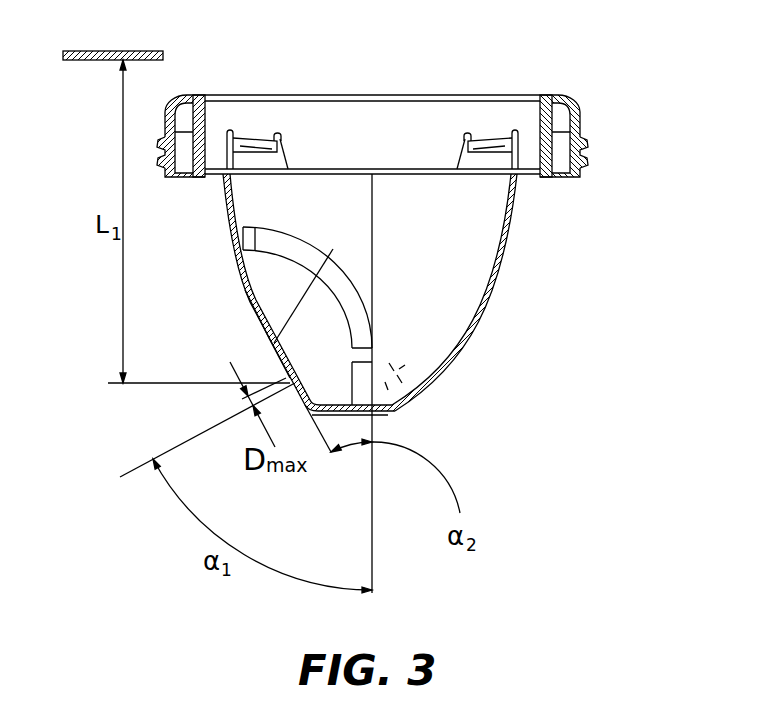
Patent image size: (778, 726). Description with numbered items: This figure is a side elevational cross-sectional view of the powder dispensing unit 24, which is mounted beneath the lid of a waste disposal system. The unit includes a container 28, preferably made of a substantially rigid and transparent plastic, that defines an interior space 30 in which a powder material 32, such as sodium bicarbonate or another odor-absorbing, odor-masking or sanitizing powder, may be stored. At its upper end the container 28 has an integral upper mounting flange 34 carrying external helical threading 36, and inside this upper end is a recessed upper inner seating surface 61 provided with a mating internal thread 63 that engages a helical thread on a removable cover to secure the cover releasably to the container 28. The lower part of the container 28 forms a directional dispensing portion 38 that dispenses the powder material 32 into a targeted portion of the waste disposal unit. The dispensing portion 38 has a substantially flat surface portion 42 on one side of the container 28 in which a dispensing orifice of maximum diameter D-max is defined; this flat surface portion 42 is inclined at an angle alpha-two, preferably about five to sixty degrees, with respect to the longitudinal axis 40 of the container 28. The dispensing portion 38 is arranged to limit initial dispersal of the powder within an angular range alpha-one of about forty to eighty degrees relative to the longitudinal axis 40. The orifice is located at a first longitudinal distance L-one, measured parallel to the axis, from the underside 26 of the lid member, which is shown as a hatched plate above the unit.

The powder dispensing unit 24 is at (567, 227).
The underside of the lid member 26 is at (77, 62).
The container 28 is at (480, 328).
The interior space 30 is at (473, 285).
The powder material 32 is at (403, 380).
The upper mounting flange 34 is at (577, 122).
The external helical threading 36 is at (587, 170).
The directional dispensing portion 38 is at (257, 352).
The longitudinal axis of the container 40 is at (372, 523).
The substantially flat surface portion 42 is at (262, 331).
The recessed upper inner seating surface 61 is at (313, 165).
The internal thread 63 is at (250, 138).